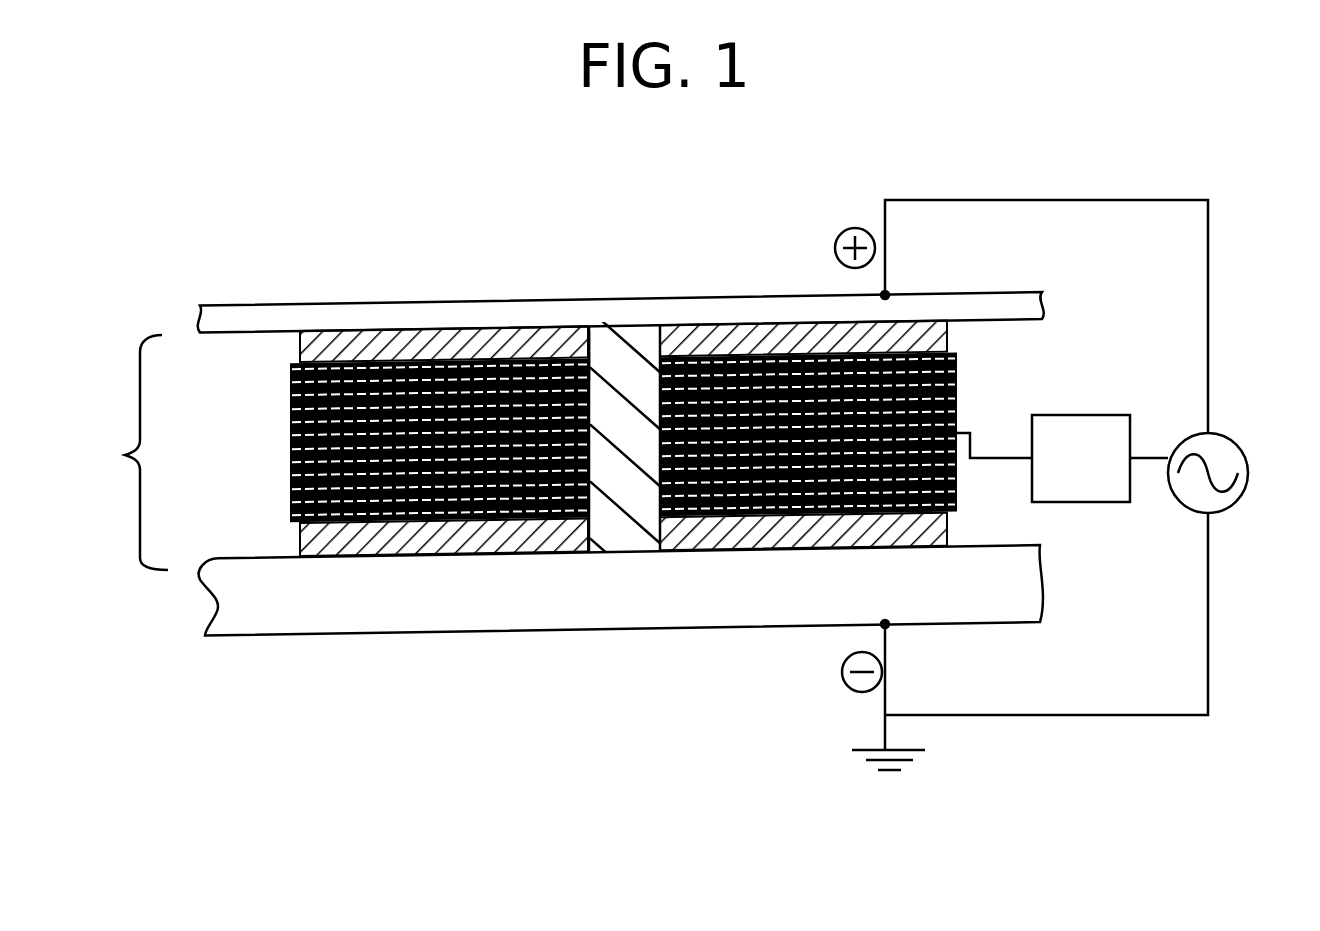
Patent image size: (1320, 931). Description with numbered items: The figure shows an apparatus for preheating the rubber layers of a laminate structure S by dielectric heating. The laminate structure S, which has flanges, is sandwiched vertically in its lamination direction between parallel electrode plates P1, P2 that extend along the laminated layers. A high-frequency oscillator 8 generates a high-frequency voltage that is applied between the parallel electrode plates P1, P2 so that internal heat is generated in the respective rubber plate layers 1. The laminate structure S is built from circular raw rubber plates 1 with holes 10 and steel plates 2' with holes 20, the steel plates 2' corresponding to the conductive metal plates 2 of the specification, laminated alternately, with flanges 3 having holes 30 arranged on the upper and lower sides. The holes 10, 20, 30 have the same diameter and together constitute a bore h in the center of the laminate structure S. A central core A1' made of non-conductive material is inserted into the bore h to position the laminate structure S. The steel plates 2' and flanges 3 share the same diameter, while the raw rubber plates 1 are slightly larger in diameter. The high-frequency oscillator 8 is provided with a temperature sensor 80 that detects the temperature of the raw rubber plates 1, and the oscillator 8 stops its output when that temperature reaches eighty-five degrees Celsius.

The raw rubber plate 1 is at (290, 372).
The conductive metal plate 2 is at (548, 437).
The steel plate 2' is at (571, 441).
The flange 3 is at (298, 347).
The laminate structure S is at (526, 445).
The parallel electrode plate P1 is at (243, 303).
The parallel electrode plate P2 is at (263, 615).
The bore h is at (594, 507).
The central core A1' is at (653, 517).
The hole 10 is at (589, 361).
The hole 20 is at (589, 373).
The hole 30 is at (596, 341).
The high-frequency oscillator 8 is at (1236, 426).
The temperature sensor 80 is at (1085, 430).